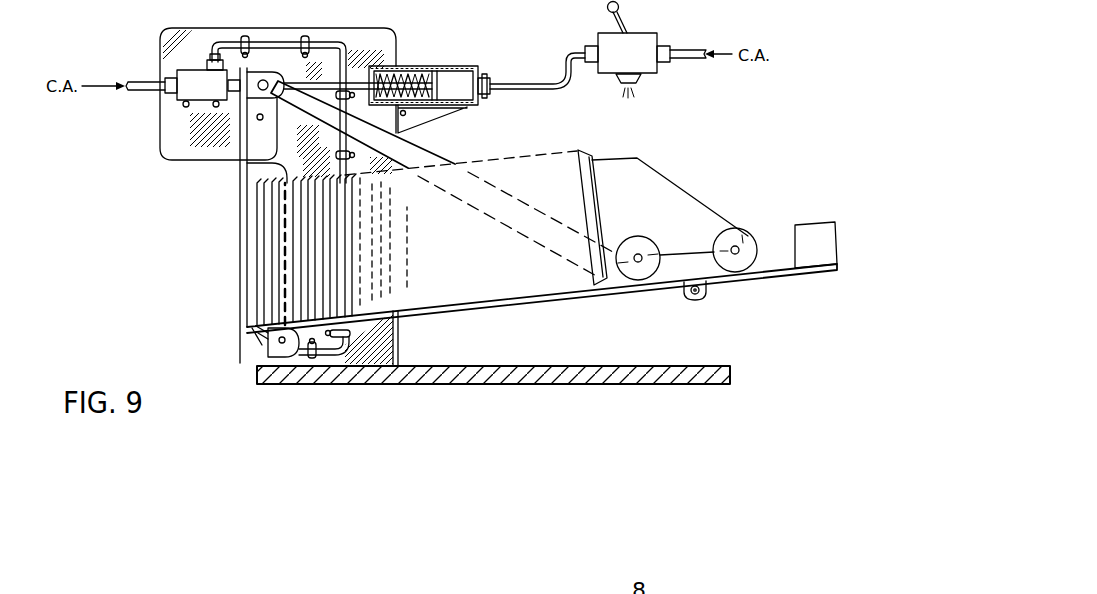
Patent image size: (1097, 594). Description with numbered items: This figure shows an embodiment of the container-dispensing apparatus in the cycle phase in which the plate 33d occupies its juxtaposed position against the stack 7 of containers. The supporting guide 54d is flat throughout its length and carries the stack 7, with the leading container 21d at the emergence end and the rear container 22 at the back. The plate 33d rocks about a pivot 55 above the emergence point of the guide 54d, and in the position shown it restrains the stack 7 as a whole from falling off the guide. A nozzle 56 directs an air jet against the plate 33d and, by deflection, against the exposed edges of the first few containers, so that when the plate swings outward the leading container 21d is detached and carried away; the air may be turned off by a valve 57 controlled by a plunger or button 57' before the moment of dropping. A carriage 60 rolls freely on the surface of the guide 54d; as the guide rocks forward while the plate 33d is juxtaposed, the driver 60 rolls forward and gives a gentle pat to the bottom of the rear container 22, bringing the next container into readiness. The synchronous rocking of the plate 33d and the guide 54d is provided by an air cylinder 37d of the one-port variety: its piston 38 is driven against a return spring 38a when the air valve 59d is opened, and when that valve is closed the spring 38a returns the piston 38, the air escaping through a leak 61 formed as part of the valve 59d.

The stack 7 is at (463, 265).
The leading container 21d is at (257, 252).
The rear container 22 is at (586, 152).
The plate 33d is at (240, 178).
The air cylinder 37d is at (466, 111).
The piston 38 is at (440, 76).
The return spring 38a is at (410, 76).
The supporting guide 54d is at (505, 298).
The pivot 55 is at (263, 121).
The nozzle 56 is at (266, 340).
The valve 57 is at (208, 80).
The plunger or button 57' is at (269, 74).
The air valve 59d is at (652, 63).
The carriage 60 is at (657, 215).
The leak 61 is at (634, 78).